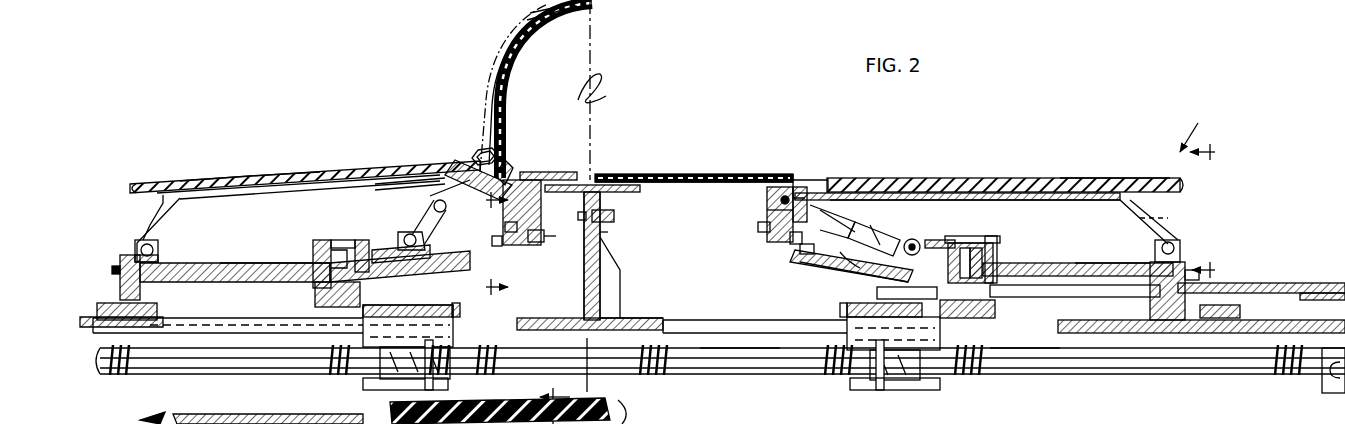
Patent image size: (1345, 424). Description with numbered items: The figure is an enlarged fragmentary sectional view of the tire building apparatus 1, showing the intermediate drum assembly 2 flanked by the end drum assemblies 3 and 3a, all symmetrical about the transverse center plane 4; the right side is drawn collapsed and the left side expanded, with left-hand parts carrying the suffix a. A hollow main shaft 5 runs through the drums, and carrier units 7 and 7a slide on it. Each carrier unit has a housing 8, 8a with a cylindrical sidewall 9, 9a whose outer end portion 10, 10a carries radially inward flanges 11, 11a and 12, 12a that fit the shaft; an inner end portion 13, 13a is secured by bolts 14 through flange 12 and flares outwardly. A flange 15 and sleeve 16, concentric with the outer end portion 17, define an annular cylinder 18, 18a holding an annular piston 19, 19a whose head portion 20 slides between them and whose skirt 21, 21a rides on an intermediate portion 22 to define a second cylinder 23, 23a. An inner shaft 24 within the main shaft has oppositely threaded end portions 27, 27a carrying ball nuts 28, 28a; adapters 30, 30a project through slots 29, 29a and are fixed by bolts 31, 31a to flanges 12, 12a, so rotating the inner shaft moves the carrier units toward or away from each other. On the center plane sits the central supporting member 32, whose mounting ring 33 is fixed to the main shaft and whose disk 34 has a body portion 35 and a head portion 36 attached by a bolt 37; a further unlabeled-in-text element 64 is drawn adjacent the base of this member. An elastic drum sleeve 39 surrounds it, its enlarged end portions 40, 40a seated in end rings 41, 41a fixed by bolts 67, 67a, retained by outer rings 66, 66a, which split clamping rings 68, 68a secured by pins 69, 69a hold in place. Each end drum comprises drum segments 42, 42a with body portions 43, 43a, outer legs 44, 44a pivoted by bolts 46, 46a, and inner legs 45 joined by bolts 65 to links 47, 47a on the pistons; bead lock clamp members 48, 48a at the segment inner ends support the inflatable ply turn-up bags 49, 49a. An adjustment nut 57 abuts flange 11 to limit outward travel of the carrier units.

The tire building apparatus 1 is at (1196, 128).
The intermediate drum assembly 2 is at (710, 174).
The end drum assembly 3 is at (1040, 178).
The end drum assembly 3a is at (322, 170).
The transverse center plane 4 is at (598, 54).
The main shaft 5 is at (1245, 320).
The carrier unit 7 is at (1195, 272).
The carrier unit 7a is at (120, 272).
The housing 8 is at (1050, 263).
The housing 8a is at (272, 263).
The sidewall portion 9 is at (1090, 263).
The sidewall portion 9a is at (240, 263).
The outer end portion 10 is at (1118, 263).
The outer end portion 10a is at (197, 263).
The outer annular flange 11 is at (1205, 307).
The outer annular flange 11a is at (127, 305).
The inner annular flange 12 is at (995, 309).
The inner annular flange 12a is at (320, 294).
The inner end portion 13 is at (838, 268).
The inner end portion 13a is at (440, 272).
The bolts 14 is at (1020, 291).
The radially outwardly projecting flange 15 is at (990, 252).
The sleeve 16 is at (952, 242).
The outer end portion 17 is at (920, 284).
The annular cylinder 18 is at (1000, 242).
The annular cylinder 18a is at (322, 245).
The annular piston 19 is at (965, 248).
The annular piston 19a is at (348, 242).
The head portion 20 is at (980, 248).
The sleeve or skirt portion 21 is at (935, 240).
The sleeve or skirt portion 21a is at (407, 236).
The intermediate portion 22 is at (875, 266).
The annular cylinder 23 is at (880, 274).
The annular cylinder 23a is at (385, 242).
The inner shaft 24 is at (736, 370).
The threaded end portion 27 is at (1000, 370).
The threaded end portion 27a is at (225, 358).
The ball nut 28 is at (850, 372).
The ball nut 28a is at (452, 382).
The slots 29 is at (718, 322).
The slots 29a is at (193, 322).
The adapters 30 is at (942, 340).
The adapters 30a is at (455, 338).
The bolts 31 is at (840, 310).
The bolts 31a is at (461, 310).
The central supporting member 32 is at (622, 274).
The mounting ring 33 is at (632, 318).
The disk 34 is at (583, 270).
The body portion 35 is at (583, 284).
The head portion 36 is at (602, 202).
The bolt 37 is at (614, 218).
The elastic drum sleeve or diaphragm 39 is at (660, 174).
The enlarged annular end portion 40 is at (765, 199).
The enlarged annular end portion 40a is at (503, 205).
The end ring 41 is at (768, 212).
The end ring 41a is at (586, 196).
The drum segments 42 is at (1085, 178).
The drum segments 42a is at (210, 182).
The body portion 43 is at (1125, 178).
The body portion 43a is at (268, 180).
The outer leg 44 is at (1170, 230).
The outer leg 44a is at (160, 214).
The inner leg 45 is at (850, 205).
The bolts 46 is at (1180, 247).
The bolts 46a is at (138, 248).
The link 47 is at (887, 238).
The link 47a is at (402, 175).
The bead lock clamp member 48 is at (800, 186).
The bead lock clamp member 48a is at (482, 147).
The inflatable ply turn-up bag 49 is at (1182, 187).
The inflatable ply turn-up bag 49a is at (165, 183).
The adjustment nut or sleeve 57 is at (1290, 283).
The base plate 64 is at (565, 319).
The bolts 65 is at (855, 224).
The outer ring 66 is at (812, 188).
The outer ring 66a is at (472, 152).
The bolts 67 is at (760, 229).
The bolts 67a is at (538, 243).
The split clamping ring 68 is at (800, 252).
The split clamping ring 68a is at (505, 227).
The bolts or pins 69 is at (790, 242).
The bolts or pins 69a is at (492, 242).